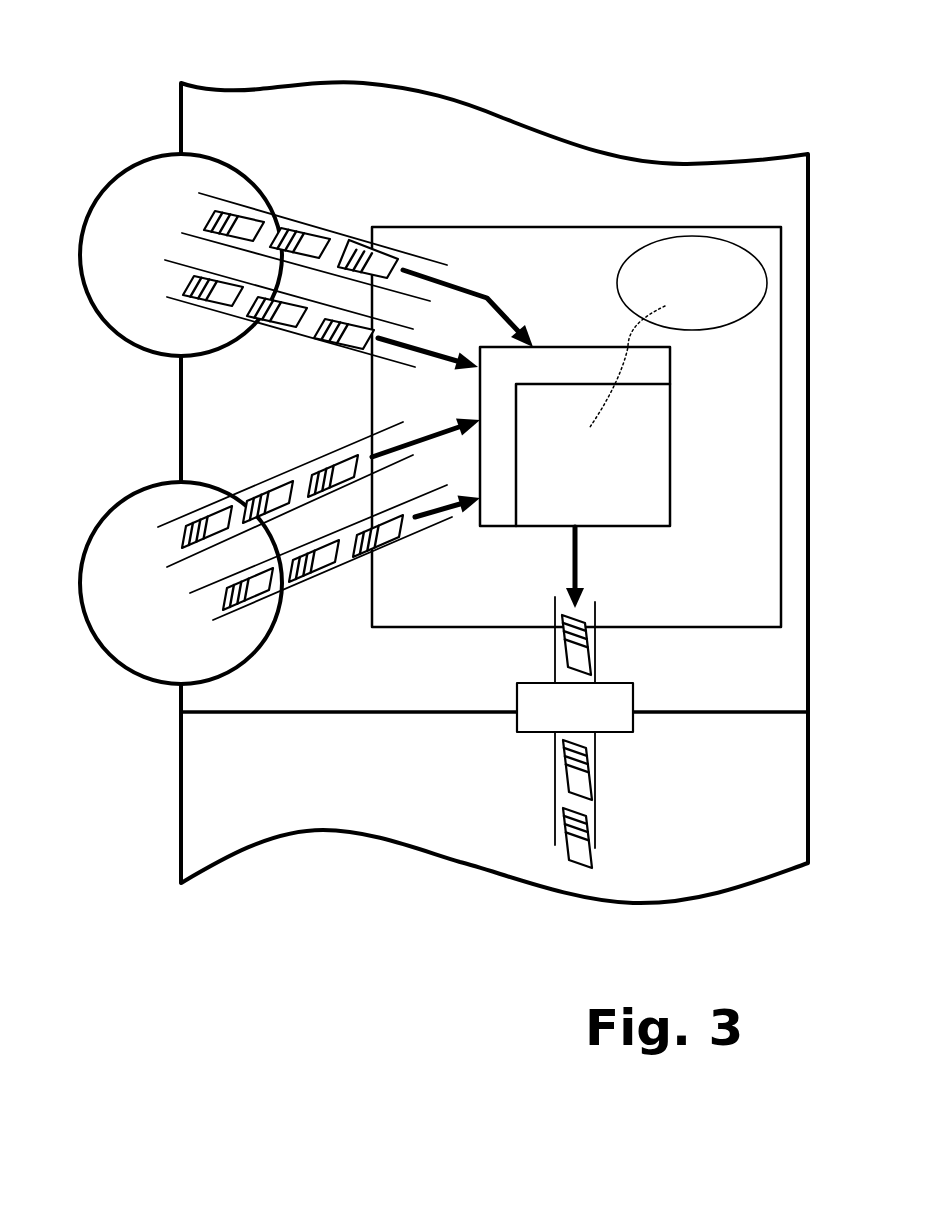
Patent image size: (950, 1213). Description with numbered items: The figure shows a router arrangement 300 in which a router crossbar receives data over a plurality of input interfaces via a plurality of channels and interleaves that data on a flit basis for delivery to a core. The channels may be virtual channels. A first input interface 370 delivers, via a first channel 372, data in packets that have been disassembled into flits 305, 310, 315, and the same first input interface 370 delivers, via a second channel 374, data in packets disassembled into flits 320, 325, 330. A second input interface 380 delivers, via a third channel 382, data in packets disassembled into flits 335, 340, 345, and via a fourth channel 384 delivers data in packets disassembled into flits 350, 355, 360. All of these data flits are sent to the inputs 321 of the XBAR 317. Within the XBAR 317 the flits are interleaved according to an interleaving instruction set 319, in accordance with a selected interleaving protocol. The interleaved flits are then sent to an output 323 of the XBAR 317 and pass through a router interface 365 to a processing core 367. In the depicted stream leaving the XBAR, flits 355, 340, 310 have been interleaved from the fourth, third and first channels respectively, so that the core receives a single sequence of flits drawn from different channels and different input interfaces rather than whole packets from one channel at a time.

The integrated circuit with router and core 300 is at (127, 35).
The flit 305 is at (243, 216).
The flit 310 is at (307, 233).
The flit 315 is at (371, 250).
The XBAR 317 is at (495, 226).
The interleaving instruction set 319 is at (717, 238).
The flit 320 is at (188, 303).
The inputs 321 is at (653, 368).
The output 323 is at (660, 512).
The flit 325 is at (253, 333).
The flit 330 is at (318, 341).
The flit 335 is at (203, 517).
The flit 340 is at (262, 497).
The flit 345 is at (323, 478).
The flit 350 is at (262, 594).
The flit 355 is at (318, 569).
The flit 360 is at (382, 551).
The router interface 365 is at (635, 730).
The processing core 367 is at (432, 853).
The first input interface 370 is at (113, 193).
The first channel 372 is at (428, 258).
The second channel 374 is at (400, 327).
The second input interface 380 is at (110, 507).
The third channel 382 is at (388, 423).
The fourth channel 384 is at (428, 527).